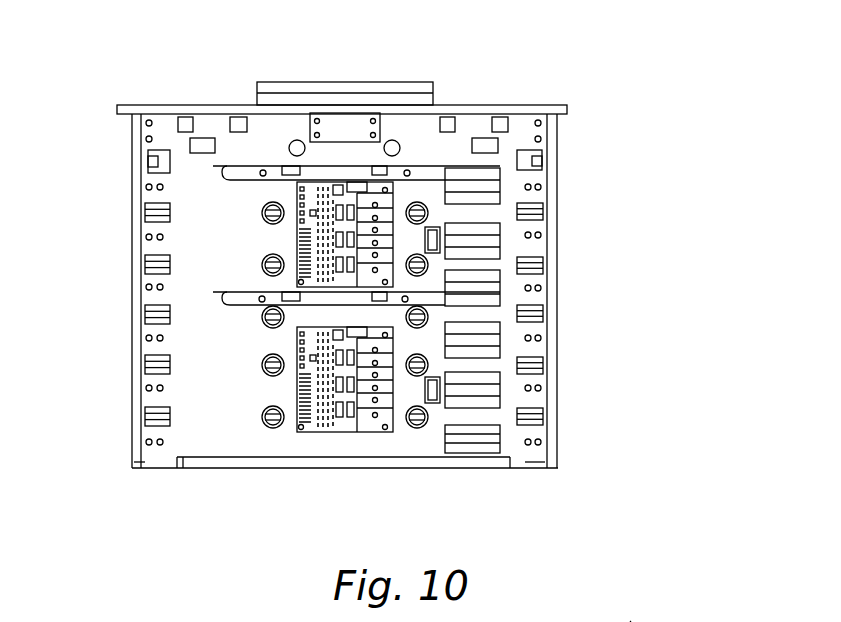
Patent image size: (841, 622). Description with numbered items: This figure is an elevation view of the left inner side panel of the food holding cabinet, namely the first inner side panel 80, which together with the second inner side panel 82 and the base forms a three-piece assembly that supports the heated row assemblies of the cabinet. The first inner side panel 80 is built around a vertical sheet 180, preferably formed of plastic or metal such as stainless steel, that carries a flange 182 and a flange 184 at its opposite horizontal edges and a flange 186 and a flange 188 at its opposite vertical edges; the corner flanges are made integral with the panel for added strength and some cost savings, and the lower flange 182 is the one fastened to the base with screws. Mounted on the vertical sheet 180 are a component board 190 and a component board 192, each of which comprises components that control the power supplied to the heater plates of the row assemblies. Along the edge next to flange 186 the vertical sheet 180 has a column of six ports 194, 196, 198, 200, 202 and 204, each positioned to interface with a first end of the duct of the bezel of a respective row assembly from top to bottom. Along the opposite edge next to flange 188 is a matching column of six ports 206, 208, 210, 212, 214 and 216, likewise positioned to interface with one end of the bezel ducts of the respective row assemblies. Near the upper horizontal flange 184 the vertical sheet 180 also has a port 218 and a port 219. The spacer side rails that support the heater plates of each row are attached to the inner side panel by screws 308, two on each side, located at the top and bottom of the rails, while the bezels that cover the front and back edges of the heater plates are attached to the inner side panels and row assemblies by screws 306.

The first inner side panel 80 is at (641, 57).
The second inner side panel 82 is at (631, 621).
The vertical sheet 180 is at (178, 443).
The flange 182 is at (238, 461).
The flange 184 is at (471, 104).
The flange 186 is at (131, 272).
The flange 188 is at (559, 395).
The component board 190 is at (318, 434).
The component board 192 is at (297, 233).
The port 194 is at (131, 160).
The port 196 is at (131, 213).
The port 198 is at (162, 254).
The port 200 is at (144, 313).
The port 202 is at (131, 366).
The port 204 is at (172, 415).
The port 206 is at (529, 140).
The port 208 is at (547, 212).
The port 210 is at (546, 237).
The port 212 is at (546, 297).
The port 214 is at (546, 352).
The port 216 is at (547, 427).
The port 218 is at (203, 137).
The port 219 is at (474, 140).
The screws 306 is at (146, 446).
The screws 308 is at (134, 463).